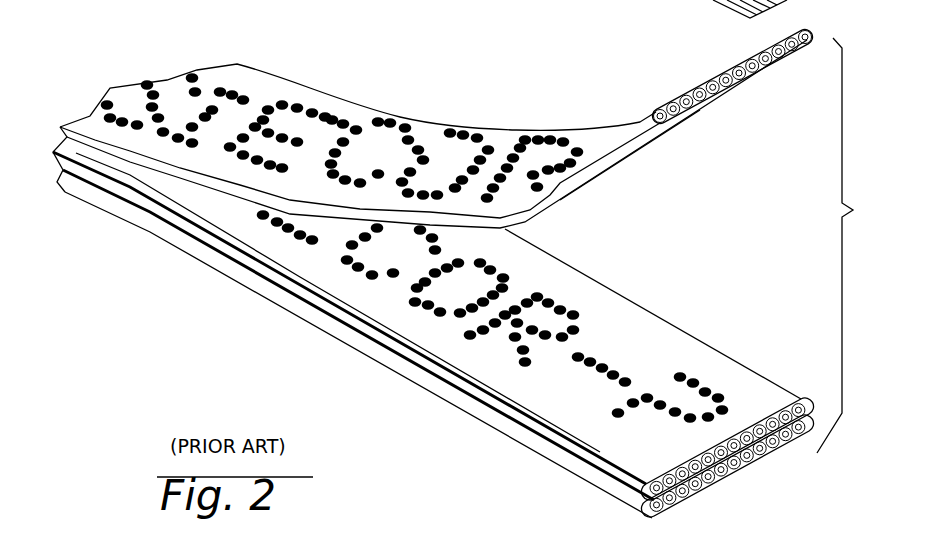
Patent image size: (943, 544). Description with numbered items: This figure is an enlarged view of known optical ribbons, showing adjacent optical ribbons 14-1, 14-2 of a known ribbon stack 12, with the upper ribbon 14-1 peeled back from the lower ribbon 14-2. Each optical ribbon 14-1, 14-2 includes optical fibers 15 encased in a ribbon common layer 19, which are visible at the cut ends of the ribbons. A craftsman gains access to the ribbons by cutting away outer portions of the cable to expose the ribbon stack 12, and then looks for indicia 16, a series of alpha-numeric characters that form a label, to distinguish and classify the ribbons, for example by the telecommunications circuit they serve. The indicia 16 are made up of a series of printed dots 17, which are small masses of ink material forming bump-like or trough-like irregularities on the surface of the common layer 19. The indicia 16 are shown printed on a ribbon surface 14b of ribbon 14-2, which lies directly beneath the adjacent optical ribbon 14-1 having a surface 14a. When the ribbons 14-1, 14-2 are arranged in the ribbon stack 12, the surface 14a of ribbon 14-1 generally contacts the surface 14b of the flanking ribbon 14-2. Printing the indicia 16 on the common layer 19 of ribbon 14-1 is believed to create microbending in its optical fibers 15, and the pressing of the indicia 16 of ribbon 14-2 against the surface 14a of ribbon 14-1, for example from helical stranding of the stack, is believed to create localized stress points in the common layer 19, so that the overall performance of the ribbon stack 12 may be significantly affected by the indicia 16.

The ribbon stack 12 is at (851, 245).
The optical ribbon 14-1 is at (815, 27).
The optical ribbon 14-2 is at (735, 358).
The surface of ribbon 14a is at (663, 135).
The ribbon surface 14b is at (715, 358).
The optical fibers 15 is at (663, 107).
The indicia 16 is at (465, 128).
The printed dots 17 is at (612, 373).
The ribbon common layer 19 is at (717, 97).